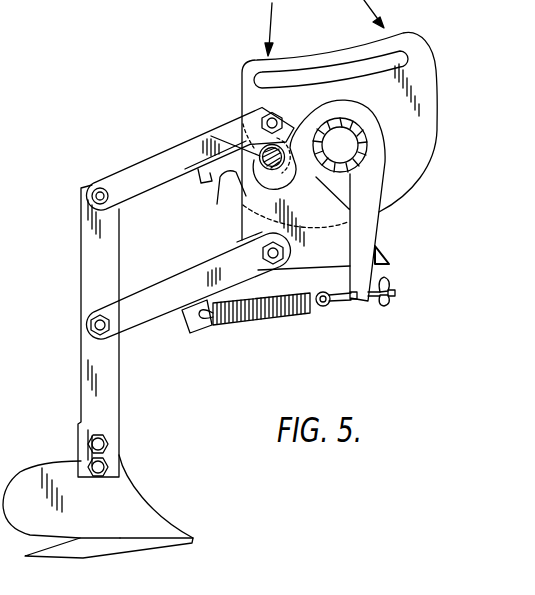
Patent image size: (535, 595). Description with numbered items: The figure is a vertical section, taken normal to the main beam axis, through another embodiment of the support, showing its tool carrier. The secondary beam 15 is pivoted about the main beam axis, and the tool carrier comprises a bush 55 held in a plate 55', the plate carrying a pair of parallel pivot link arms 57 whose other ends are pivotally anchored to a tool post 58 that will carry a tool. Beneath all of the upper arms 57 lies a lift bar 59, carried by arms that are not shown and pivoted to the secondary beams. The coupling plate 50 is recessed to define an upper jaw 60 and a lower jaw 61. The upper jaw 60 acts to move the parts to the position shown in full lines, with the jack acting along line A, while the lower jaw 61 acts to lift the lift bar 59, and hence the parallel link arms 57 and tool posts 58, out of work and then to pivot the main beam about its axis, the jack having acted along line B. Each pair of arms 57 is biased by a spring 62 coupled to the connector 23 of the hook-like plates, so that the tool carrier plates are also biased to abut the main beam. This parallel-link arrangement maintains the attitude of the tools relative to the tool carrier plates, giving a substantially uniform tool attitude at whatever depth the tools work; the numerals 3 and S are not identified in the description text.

The line of jack action A is at (261, 29).
The line of jack action B is at (378, 14).
The clamp plate 3 is at (329, 66).
The coupling plate 50 is at (242, 86).
The tool shank / standard S is at (345, 155).
The secondary beam 15 is at (265, 162).
The upper jaw 60 is at (237, 120).
The parallel pivot link arms 57 is at (153, 164).
The bush 55 is at (211, 146).
The plate 55' is at (229, 245).
The lift bar 59 is at (202, 185).
The lower jaw 61 is at (223, 186).
The tool post 58 is at (92, 280).
The spring 62 is at (278, 317).
The connector 23 is at (384, 303).